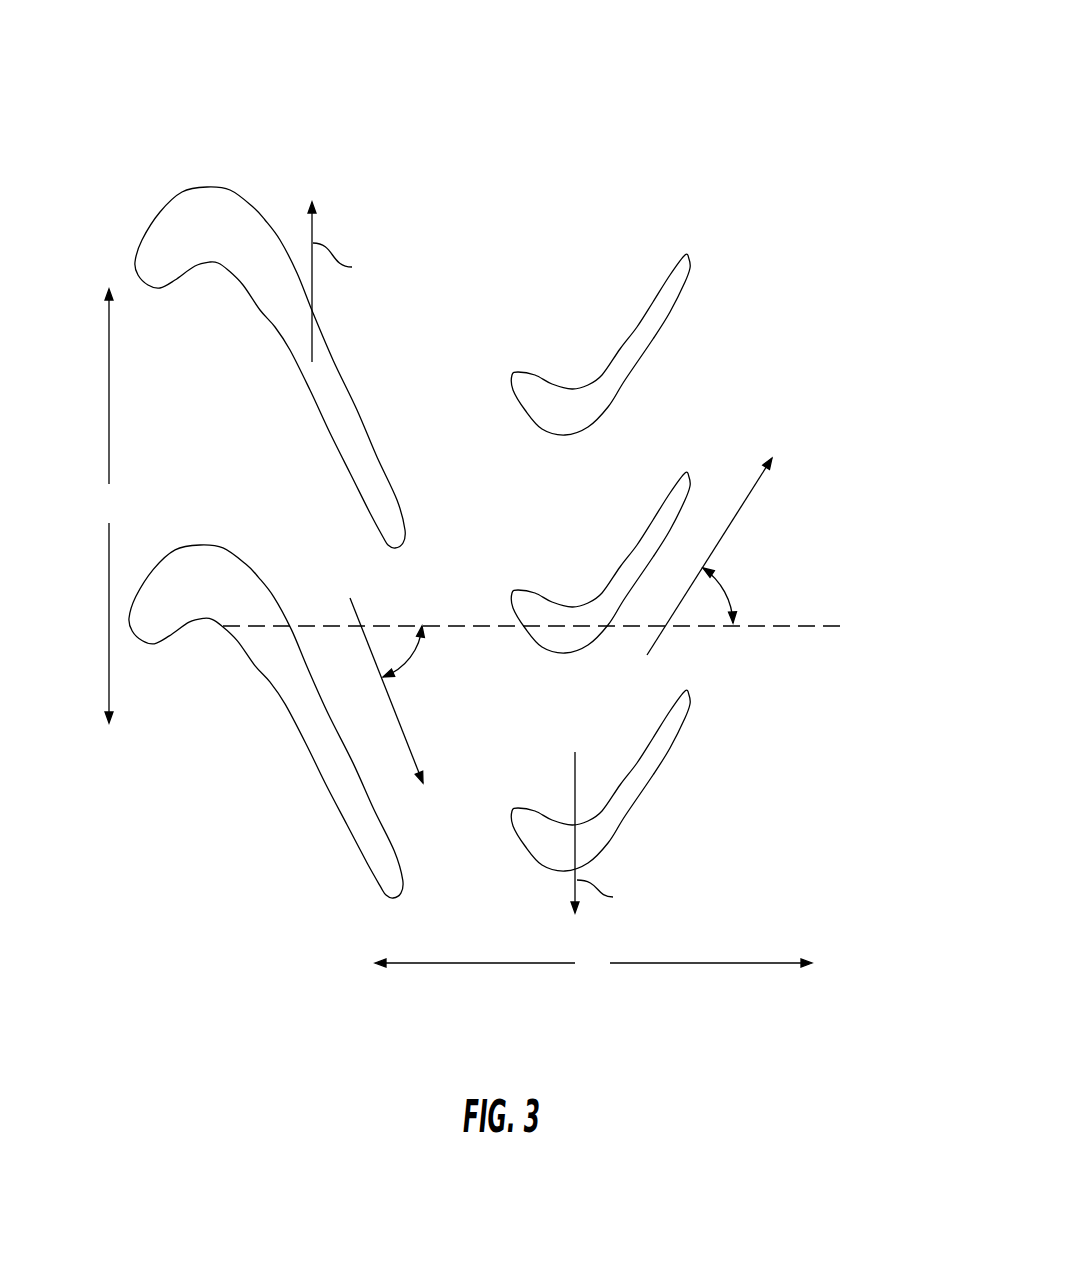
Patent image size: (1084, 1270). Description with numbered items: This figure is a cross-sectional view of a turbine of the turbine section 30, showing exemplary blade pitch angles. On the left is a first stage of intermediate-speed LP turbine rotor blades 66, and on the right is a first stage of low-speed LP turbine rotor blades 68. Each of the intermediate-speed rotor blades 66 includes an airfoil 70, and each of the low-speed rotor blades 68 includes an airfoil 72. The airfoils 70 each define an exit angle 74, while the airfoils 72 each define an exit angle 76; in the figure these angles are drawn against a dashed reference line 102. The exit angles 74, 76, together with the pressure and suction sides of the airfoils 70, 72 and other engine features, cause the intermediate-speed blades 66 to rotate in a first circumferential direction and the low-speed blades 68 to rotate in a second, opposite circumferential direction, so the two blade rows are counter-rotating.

The turbine section / stage 30 is at (505, 65).
The intermediate-speed LP turbine rotor blades 66 is at (253, 152).
The low-speed LP turbine rotor blades 68 is at (605, 250).
The airfoil 70 is at (228, 270).
The airfoil 72 is at (638, 342).
The exit angle 74 is at (407, 658).
The exit angle 76 is at (728, 595).
The reference plane / axial line 102 is at (827, 625).